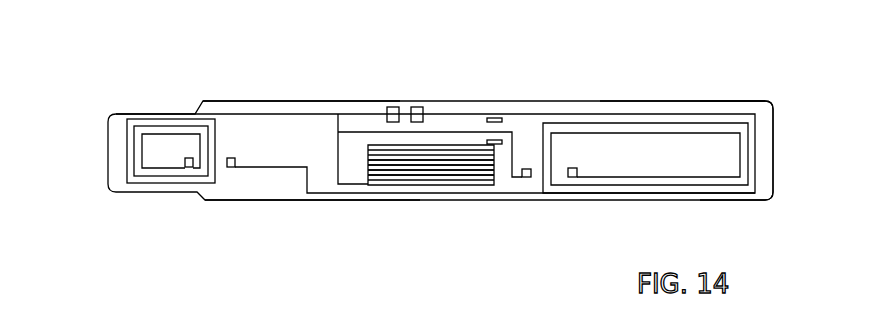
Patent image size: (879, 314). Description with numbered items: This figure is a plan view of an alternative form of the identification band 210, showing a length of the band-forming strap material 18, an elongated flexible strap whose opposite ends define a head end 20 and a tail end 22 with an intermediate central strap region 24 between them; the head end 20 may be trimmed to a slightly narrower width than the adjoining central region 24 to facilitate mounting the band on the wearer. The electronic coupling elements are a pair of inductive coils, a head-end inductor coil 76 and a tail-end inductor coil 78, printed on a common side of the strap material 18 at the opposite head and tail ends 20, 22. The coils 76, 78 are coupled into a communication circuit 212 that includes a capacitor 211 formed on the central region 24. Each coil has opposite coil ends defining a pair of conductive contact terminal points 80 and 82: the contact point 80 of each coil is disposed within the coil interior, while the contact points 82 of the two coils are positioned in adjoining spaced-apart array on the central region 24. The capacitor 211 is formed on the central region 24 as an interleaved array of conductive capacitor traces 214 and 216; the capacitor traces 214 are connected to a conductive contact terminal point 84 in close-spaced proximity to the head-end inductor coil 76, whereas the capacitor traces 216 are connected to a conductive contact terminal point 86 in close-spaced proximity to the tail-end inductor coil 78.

The substrate strap 18 is at (258, 188).
The head end 20 is at (113, 110).
The tail end 22 is at (767, 137).
The central strap region 24 is at (491, 97).
The head-end inductor coil 76 is at (158, 170).
The tail-end inductor coil 78 is at (745, 180).
The conductive contact terminal point 80 is at (187, 158).
The conductive contact terminal point 82 is at (393, 107).
The conductive contact terminal point 84 is at (230, 158).
The conductive contact terminal point 86 is at (527, 169).
The transponder assembly 210 is at (738, 67).
The capacitor 211 is at (456, 184).
The communication circuit 212 is at (300, 70).
The capacitor traces 214 is at (493, 180).
The capacitor traces 216 is at (368, 158).